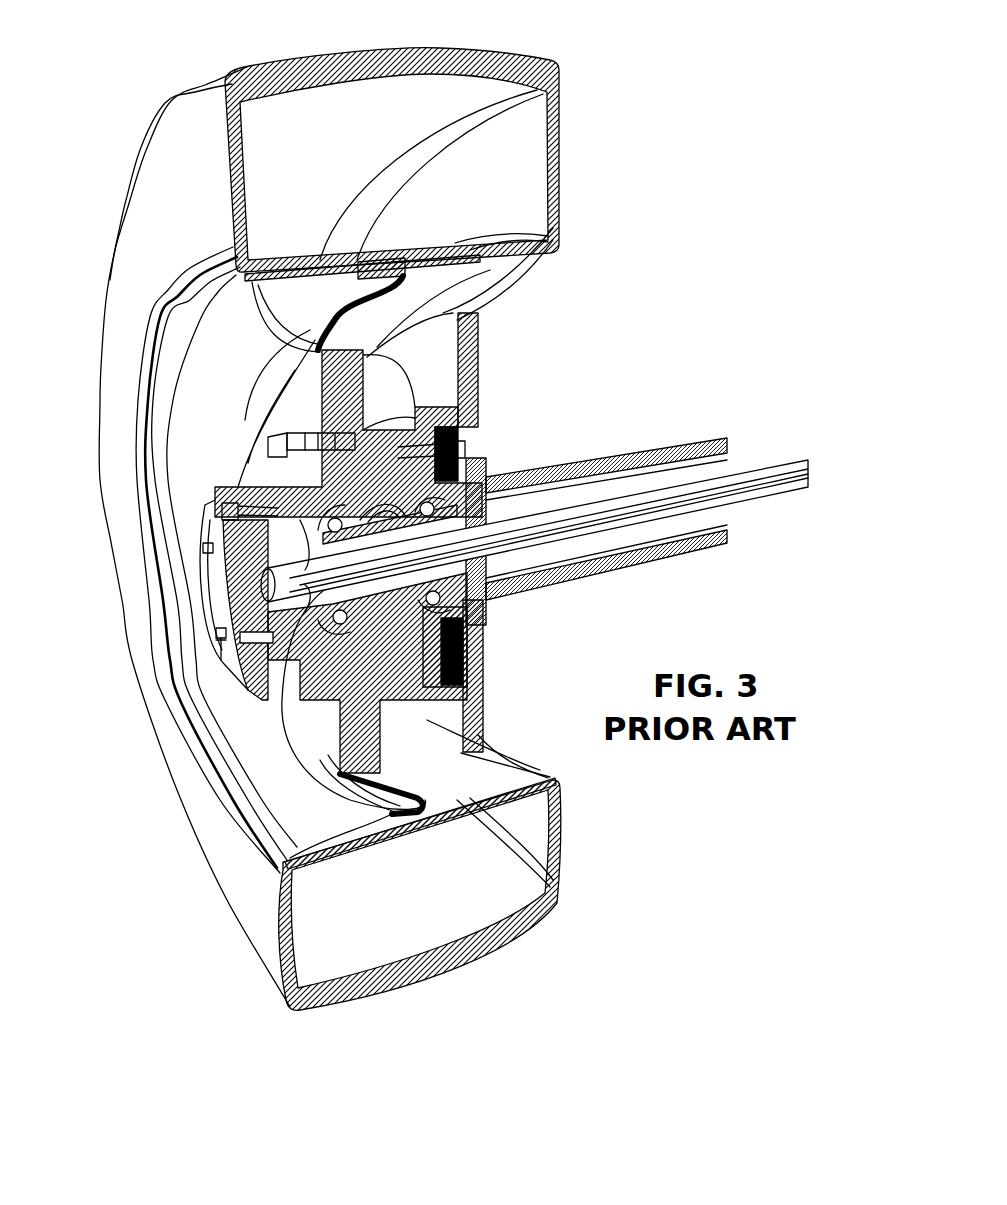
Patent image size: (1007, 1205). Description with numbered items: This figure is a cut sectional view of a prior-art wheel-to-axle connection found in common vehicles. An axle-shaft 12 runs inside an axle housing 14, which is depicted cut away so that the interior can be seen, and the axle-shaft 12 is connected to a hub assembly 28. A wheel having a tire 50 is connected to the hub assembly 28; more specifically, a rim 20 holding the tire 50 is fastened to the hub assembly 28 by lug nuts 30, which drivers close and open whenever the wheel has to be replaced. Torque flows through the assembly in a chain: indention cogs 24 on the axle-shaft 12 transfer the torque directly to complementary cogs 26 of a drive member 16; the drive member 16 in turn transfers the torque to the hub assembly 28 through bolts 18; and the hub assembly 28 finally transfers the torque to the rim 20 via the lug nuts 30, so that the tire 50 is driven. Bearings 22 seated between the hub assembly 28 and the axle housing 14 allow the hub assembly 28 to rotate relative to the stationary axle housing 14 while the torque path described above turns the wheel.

The axle-shaft 12 is at (753, 487).
The axle housing 14 is at (570, 462).
The drive member 16 is at (220, 575).
The bolts 18 is at (192, 551).
The rim 20 is at (225, 355).
The bearings 22 is at (430, 606).
The indention cogs 24 is at (285, 612).
The complementary cogs 26 is at (212, 640).
The hub assembly 28 is at (480, 333).
The lug nuts 30 is at (262, 447).
The tire 50 is at (198, 810).